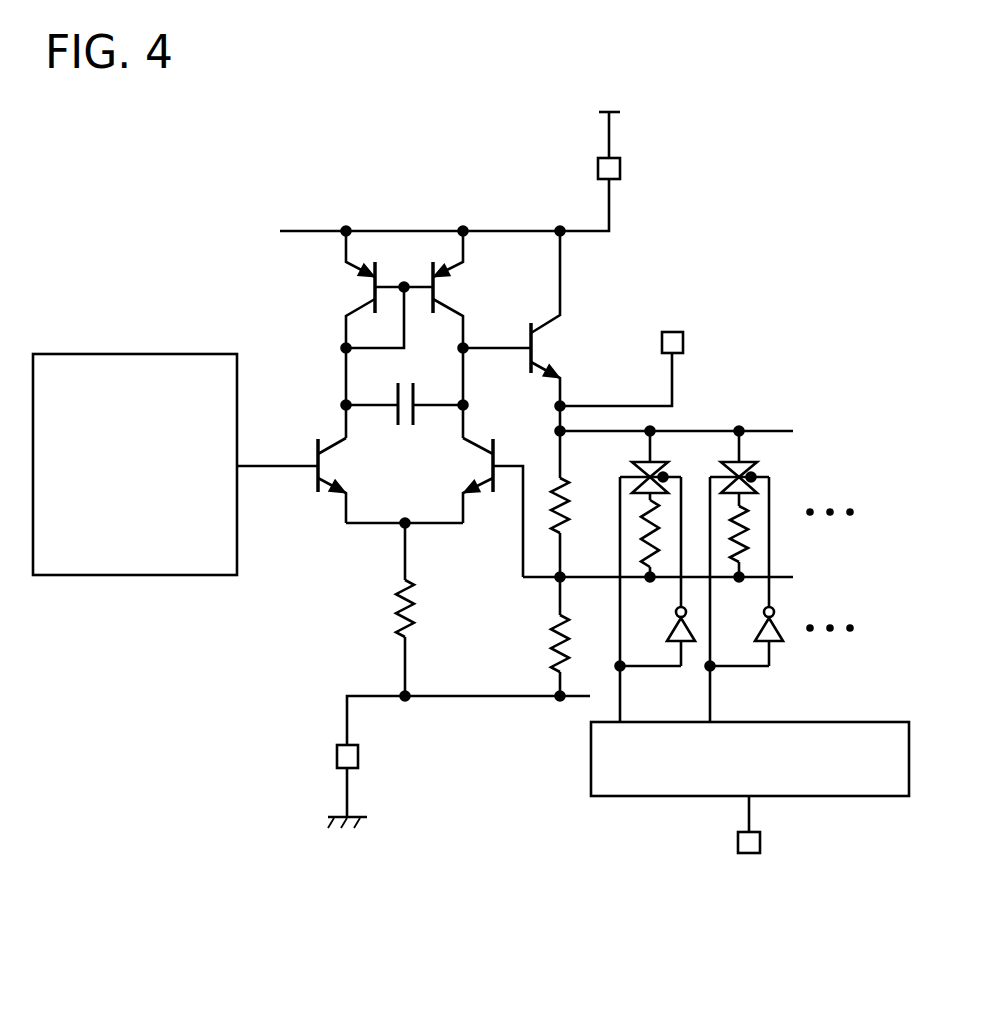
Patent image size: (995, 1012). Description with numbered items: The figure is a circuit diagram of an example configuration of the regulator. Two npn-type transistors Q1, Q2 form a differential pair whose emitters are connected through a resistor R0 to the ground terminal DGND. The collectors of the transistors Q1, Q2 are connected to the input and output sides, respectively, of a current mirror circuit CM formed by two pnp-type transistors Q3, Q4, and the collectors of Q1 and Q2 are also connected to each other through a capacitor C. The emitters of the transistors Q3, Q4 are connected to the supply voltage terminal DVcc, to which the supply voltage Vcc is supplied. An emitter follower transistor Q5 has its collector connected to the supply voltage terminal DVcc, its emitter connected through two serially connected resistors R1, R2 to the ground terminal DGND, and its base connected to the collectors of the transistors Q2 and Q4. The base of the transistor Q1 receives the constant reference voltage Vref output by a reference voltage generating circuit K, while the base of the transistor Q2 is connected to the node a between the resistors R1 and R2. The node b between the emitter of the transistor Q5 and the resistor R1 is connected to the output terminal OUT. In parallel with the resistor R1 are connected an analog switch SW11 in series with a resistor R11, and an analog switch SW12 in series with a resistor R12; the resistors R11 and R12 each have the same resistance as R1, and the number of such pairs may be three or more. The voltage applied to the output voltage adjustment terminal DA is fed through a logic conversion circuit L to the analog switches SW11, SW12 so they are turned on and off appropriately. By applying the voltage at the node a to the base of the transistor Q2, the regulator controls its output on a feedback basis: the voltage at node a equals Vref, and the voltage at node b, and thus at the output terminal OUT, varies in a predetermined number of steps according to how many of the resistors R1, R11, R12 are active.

The reference voltage generating circuit K is at (178, 354).
The current mirror circuit CM is at (404, 248).
The npn-type transistor Q1 is at (330, 464).
The npn-type transistor Q2 is at (487, 467).
The pnp-type transistor Q3 is at (367, 288).
The pnp-type transistor Q4 is at (440, 290).
The emitter follower transistor Q5 is at (542, 351).
The capacitor C is at (409, 382).
The resistor R0 is at (422, 612).
The resistor R1 is at (573, 512).
The resistor R2 is at (548, 635).
The resistor R11 is at (642, 529).
The resistor R12 is at (749, 542).
The analog switch SW11 is at (652, 460).
The analog switch SW12 is at (748, 460).
The logic conversion circuit L is at (857, 724).
The supply voltage terminal DVcc is at (620, 168).
The ground terminal DGND is at (358, 757).
The output terminal OUT is at (703, 336).
The output voltage adjustment terminal DA is at (760, 842).
The supply voltage Vcc is at (661, 127).
The reference voltage Vref is at (277, 451).
The node a is at (562, 582).
The node b is at (555, 406).